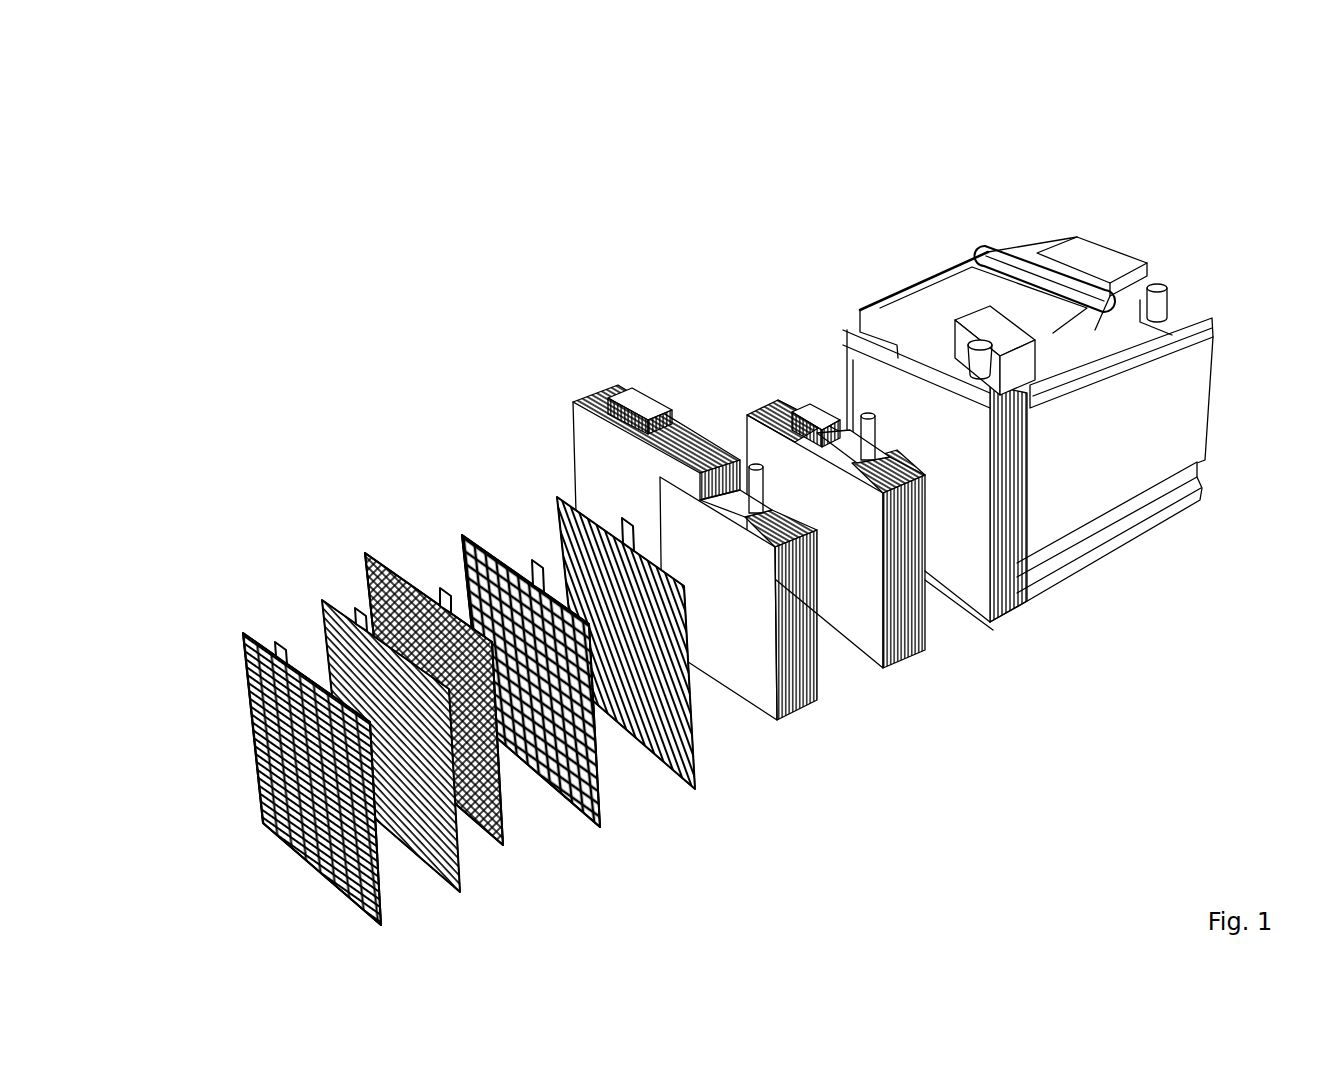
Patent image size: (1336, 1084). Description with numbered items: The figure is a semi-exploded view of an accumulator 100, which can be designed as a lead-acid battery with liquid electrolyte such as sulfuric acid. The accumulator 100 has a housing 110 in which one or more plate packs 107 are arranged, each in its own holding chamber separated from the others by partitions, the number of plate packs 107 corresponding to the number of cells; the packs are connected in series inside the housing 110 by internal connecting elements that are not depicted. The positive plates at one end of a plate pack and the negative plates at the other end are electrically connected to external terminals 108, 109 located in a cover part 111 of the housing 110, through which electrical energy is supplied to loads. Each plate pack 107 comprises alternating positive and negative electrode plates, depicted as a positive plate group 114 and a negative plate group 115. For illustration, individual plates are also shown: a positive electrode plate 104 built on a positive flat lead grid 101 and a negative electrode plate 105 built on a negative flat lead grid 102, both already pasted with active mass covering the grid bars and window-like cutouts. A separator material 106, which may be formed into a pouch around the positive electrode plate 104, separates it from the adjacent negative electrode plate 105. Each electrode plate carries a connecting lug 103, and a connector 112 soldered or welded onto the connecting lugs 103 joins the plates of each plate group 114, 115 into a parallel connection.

The accumulator 100 is at (783, 186).
The positive flat lead grid 101 is at (253, 750).
The negative flat lead grid 102 is at (592, 768).
The connecting lug 103 is at (348, 612).
The positive electrode plate 104 is at (320, 633).
The negative electrode plate 105 is at (690, 742).
The separator material 106 is at (360, 578).
The plate pack 107 is at (756, 392).
The external terminal 108 is at (1153, 283).
The external terminal 109 is at (967, 333).
The housing 110 is at (1192, 392).
The cover part 111 is at (1100, 325).
The connector 112 is at (680, 551).
The positive plate group 114 is at (587, 432).
The negative plate group 115 is at (767, 697).